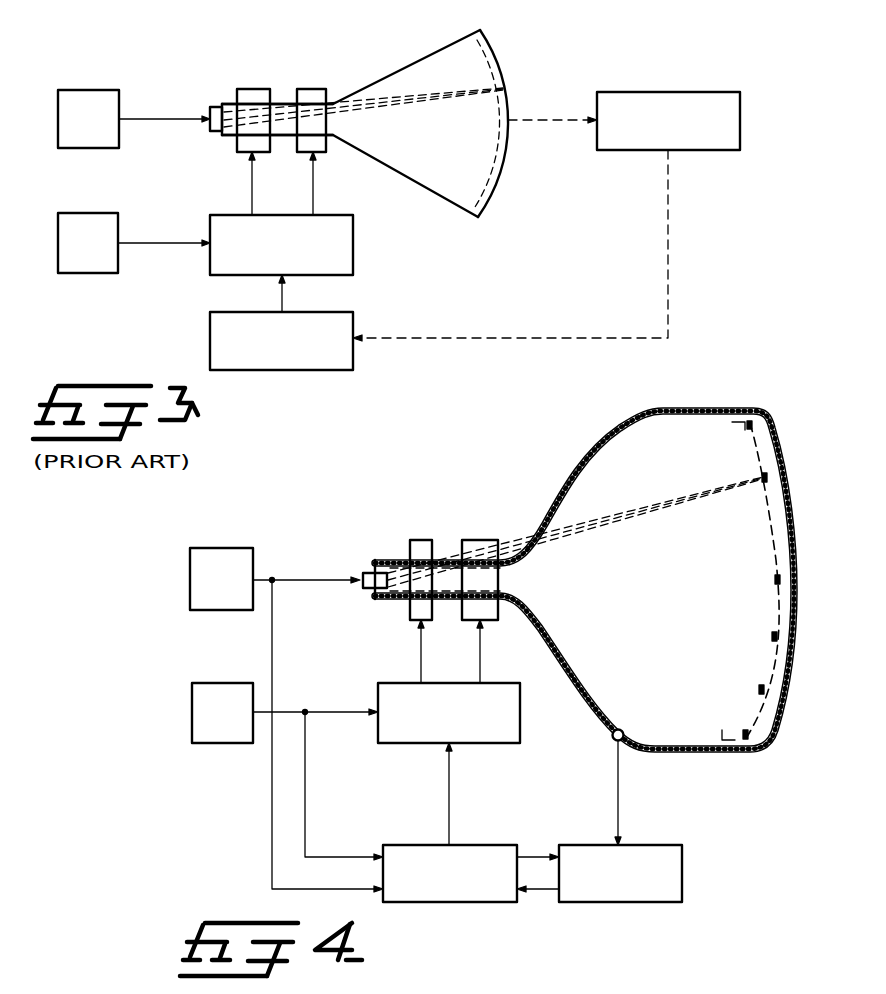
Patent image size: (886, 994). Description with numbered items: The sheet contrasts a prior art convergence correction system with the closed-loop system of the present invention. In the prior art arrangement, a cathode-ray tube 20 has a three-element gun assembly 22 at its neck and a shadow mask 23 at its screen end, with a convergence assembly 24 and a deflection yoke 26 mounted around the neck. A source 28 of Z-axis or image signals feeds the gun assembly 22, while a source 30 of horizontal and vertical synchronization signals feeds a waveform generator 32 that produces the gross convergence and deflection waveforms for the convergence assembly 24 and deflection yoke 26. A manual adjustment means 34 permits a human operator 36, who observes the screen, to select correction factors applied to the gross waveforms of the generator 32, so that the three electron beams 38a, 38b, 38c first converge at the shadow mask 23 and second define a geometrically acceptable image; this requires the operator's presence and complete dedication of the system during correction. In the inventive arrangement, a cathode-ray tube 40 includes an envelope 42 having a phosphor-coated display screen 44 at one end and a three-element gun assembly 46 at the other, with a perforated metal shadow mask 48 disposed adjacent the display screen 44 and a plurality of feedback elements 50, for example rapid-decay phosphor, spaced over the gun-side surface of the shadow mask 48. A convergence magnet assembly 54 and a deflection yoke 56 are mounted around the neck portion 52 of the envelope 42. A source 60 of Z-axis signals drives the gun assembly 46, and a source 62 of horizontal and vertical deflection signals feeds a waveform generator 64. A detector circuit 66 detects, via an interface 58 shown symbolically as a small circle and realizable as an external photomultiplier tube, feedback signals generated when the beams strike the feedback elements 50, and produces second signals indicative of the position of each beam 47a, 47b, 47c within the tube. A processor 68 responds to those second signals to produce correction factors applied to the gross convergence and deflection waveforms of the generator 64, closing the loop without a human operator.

In FIG. 3, the cathode-ray tube 20 is at (336, 123).
In FIG. 3, the three-element gun assembly 22 is at (208, 110).
In FIG. 3, the shadow mask 23 is at (488, 190).
In FIG. 3, the convergence assembly 24 is at (248, 89).
In FIG. 3, the deflection yoke 26 is at (310, 89).
In FIG. 3, the source of Z-axis signals 28 is at (80, 90).
In FIG. 3, the source of horizontal and vertical synchronization signals 30 is at (73, 214).
In FIG. 3, the waveform generator 32 is at (214, 216).
In FIG. 3, the manual adjustment means 34 is at (345, 312).
In FIG. 3, the human operator 36 is at (708, 92).
In FIG. 3, the electron beam 38a is at (383, 103).
In FIG. 3, the electron beam 38b is at (372, 116).
In FIG. 3, the electron beam 38c is at (408, 112).
In FIG. 4, the cathode-ray tube 40 is at (566, 566).
In FIG. 4, the envelope 42 is at (698, 409).
In FIG. 4, the phosphor-coated display screen 44 is at (770, 441).
In FIG. 4, the three-element gun assembly 46 is at (360, 580).
In FIG. 4, the electron beam 47a is at (666, 519).
In FIG. 4, the electron beam 47b is at (597, 544).
In FIG. 4, the electron beam 47c is at (656, 527).
In FIG. 4, the shadow mask 48 is at (757, 438).
In FIG. 4, the feedback elements 50 is at (775, 580).
In FIG. 4, the neck portion 52 is at (455, 560).
In FIG. 4, the convergence magnet assembly 54 is at (410, 545).
In FIG. 4, the deflection yoke 56 is at (480, 540).
In FIG. 4, the interface 58 is at (610, 741).
In FIG. 4, the source of Z-axis signals 60 is at (202, 549).
In FIG. 4, the source of horizontal and vertical deflection signals 62 is at (204, 684).
In FIG. 4, the waveform generator 64 is at (392, 684).
In FIG. 4, the detector circuit 66 is at (577, 845).
In FIG. 4, the processor 68 is at (406, 845).